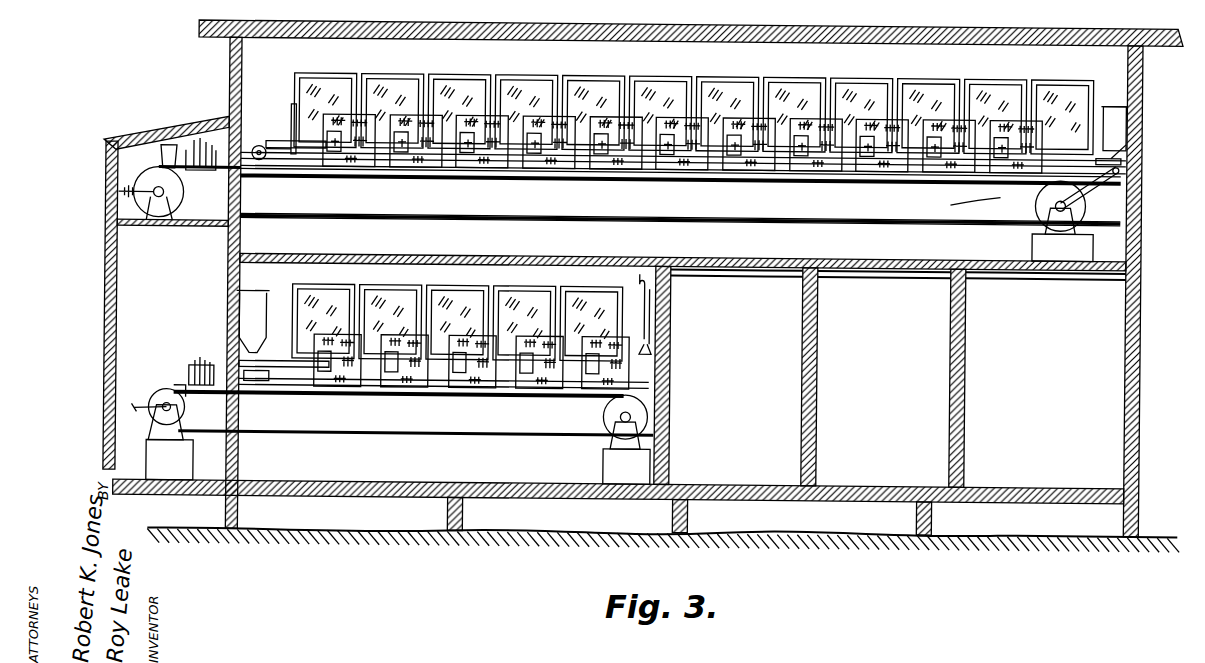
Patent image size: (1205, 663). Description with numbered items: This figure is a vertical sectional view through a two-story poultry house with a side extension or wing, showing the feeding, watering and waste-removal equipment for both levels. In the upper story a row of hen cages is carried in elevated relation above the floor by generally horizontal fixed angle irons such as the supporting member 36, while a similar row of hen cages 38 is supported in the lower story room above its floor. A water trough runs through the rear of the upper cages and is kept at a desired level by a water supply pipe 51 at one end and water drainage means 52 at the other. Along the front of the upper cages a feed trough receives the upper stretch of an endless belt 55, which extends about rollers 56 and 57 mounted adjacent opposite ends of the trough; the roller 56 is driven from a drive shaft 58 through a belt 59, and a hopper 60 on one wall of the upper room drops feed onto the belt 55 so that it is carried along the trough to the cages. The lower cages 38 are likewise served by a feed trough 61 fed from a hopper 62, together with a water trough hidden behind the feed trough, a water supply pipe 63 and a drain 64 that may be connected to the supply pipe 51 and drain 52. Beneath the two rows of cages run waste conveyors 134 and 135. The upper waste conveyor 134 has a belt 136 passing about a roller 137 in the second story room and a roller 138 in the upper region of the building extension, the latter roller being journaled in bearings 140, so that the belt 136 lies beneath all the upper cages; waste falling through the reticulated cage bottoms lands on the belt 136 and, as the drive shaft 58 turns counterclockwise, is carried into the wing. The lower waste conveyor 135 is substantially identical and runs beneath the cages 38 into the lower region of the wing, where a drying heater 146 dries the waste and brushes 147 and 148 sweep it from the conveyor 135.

The supporting member 36 is at (262, 205).
The hen cage 38 is at (500, 332).
The water supply pipe 51 is at (1120, 245).
The water drainage means 52 is at (290, 108).
The endless belt 55 is at (280, 172).
The roller 56 is at (1120, 162).
The roller 57 is at (258, 145).
The drive shaft 58 is at (1055, 203).
The belt 59 is at (1068, 221).
The hopper 60 is at (1110, 128).
The feed trough 61 is at (295, 362).
The hopper 62 is at (248, 320).
The water supply pipe 63 is at (660, 320).
The drain 64 is at (256, 382).
The waste conveyor 134 is at (884, 228).
The waste conveyor 135 is at (590, 440).
The belt 136 is at (715, 228).
The roller 137 is at (960, 204).
The roller 138 is at (164, 192).
The bearings 140 is at (163, 222).
The drying heater 146 is at (208, 368).
The brush 147 is at (175, 378).
The brush 148 is at (135, 405).